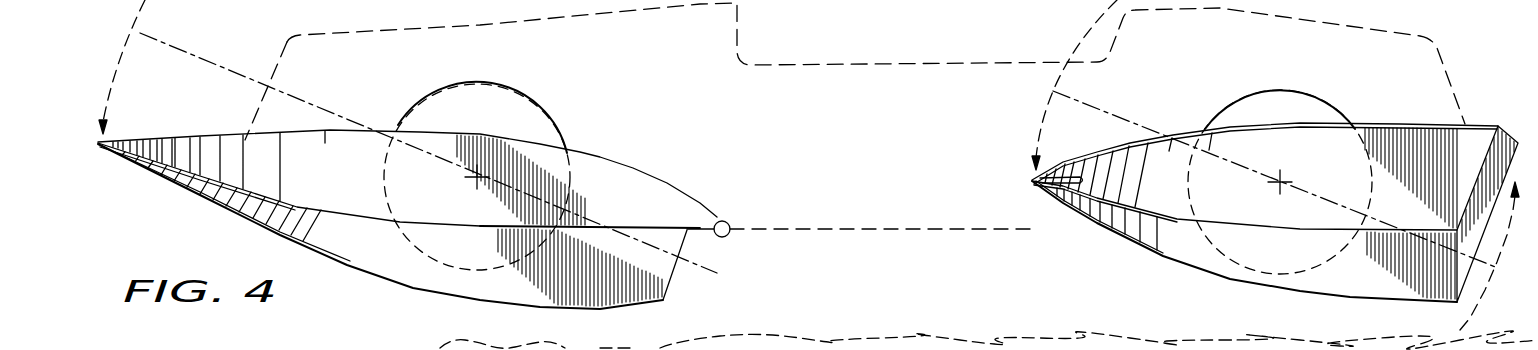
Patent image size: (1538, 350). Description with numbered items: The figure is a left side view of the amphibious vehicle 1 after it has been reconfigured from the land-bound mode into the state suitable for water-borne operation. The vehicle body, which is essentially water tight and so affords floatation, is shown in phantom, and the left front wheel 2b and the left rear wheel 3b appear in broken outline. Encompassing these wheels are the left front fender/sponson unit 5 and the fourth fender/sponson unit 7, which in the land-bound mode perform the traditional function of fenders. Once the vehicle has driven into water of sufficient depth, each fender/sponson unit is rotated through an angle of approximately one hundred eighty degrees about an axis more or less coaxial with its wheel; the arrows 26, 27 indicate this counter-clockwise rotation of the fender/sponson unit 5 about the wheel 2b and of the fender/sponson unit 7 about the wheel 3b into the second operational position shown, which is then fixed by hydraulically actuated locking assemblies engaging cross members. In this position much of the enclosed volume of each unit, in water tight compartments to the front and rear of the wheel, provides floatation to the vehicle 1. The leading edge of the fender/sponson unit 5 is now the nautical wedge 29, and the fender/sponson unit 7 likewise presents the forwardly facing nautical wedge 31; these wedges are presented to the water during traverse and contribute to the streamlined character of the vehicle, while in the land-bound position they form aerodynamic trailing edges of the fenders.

The amphibious vehicle 1 is at (927, 50).
The left front wheel 2b is at (528, 128).
The left rear wheel 3b is at (1320, 115).
The left front fender/sponson unit 5 is at (213, 193).
The fourth fender/sponson unit 7 is at (1168, 238).
The arrow 26 is at (110, 97).
The arrow 27 is at (1040, 147).
The nautical wedge 29 is at (255, 225).
The nautical wedge 31 is at (1085, 227).